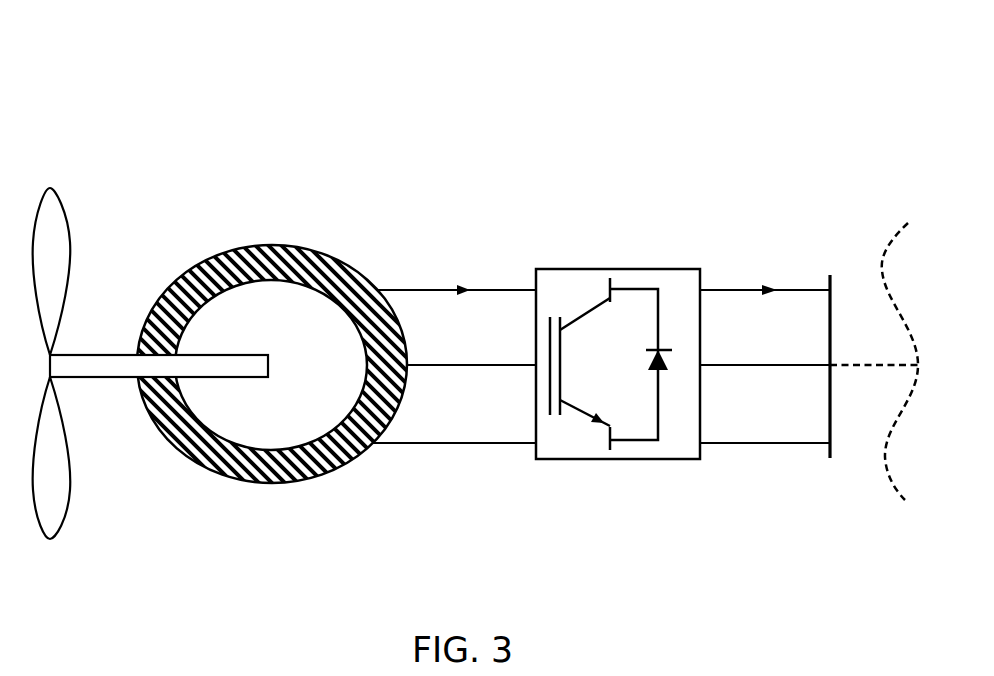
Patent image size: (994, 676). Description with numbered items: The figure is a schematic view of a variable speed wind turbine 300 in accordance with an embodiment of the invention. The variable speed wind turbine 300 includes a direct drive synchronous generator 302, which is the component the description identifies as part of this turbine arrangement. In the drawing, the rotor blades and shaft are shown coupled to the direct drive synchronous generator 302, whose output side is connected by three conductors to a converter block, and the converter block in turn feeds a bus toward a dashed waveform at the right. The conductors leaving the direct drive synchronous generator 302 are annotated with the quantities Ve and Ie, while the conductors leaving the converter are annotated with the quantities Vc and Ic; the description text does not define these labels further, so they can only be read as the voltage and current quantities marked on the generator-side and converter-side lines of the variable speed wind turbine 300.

The variable speed wind turbine 300 is at (153, 106).
The direct drive synchronous generator 302 is at (350, 266).
The generator output voltage Ve is at (417, 269).
The generator output current Ie is at (496, 272).
The converter output voltage Vc is at (731, 267).
The converter output current Ic is at (796, 270).